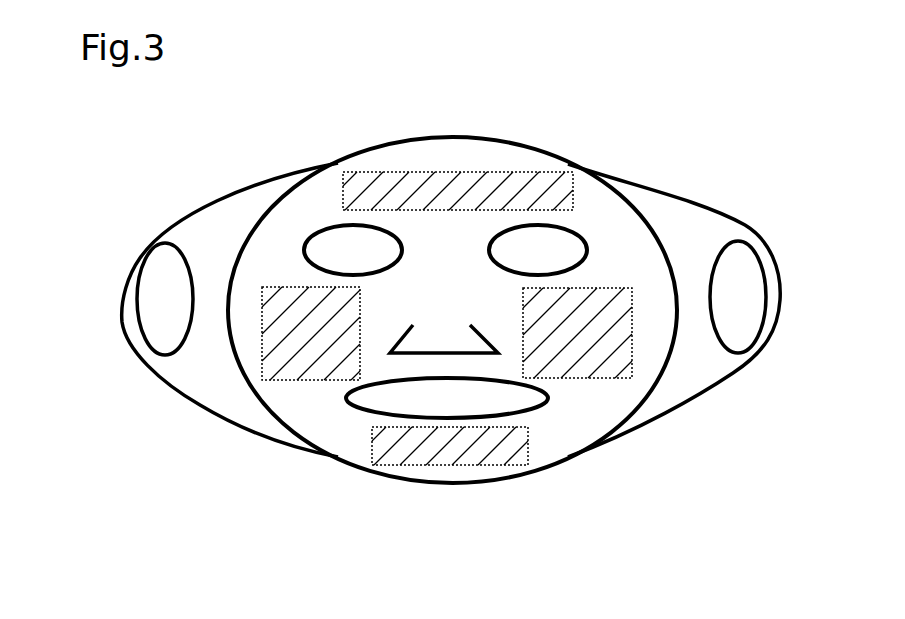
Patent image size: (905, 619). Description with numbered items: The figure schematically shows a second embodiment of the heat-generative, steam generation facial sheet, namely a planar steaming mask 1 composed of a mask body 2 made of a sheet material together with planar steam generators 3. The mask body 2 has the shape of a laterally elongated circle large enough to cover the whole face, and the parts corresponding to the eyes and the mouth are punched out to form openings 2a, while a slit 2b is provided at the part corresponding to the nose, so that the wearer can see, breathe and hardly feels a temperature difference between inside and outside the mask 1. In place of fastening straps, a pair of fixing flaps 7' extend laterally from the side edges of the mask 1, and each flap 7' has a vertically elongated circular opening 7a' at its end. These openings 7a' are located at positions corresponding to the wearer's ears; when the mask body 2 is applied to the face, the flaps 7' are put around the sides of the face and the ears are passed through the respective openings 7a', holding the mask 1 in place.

The steaming mask 1 is at (615, 96).
The mask body 2 is at (620, 226).
The openings 2a is at (340, 256).
The slit 2b is at (488, 343).
The planar steam generators 3 is at (490, 183).
The fixing flaps 7' is at (455, 286).
The vertically elongated circular opening 7a' is at (454, 295).